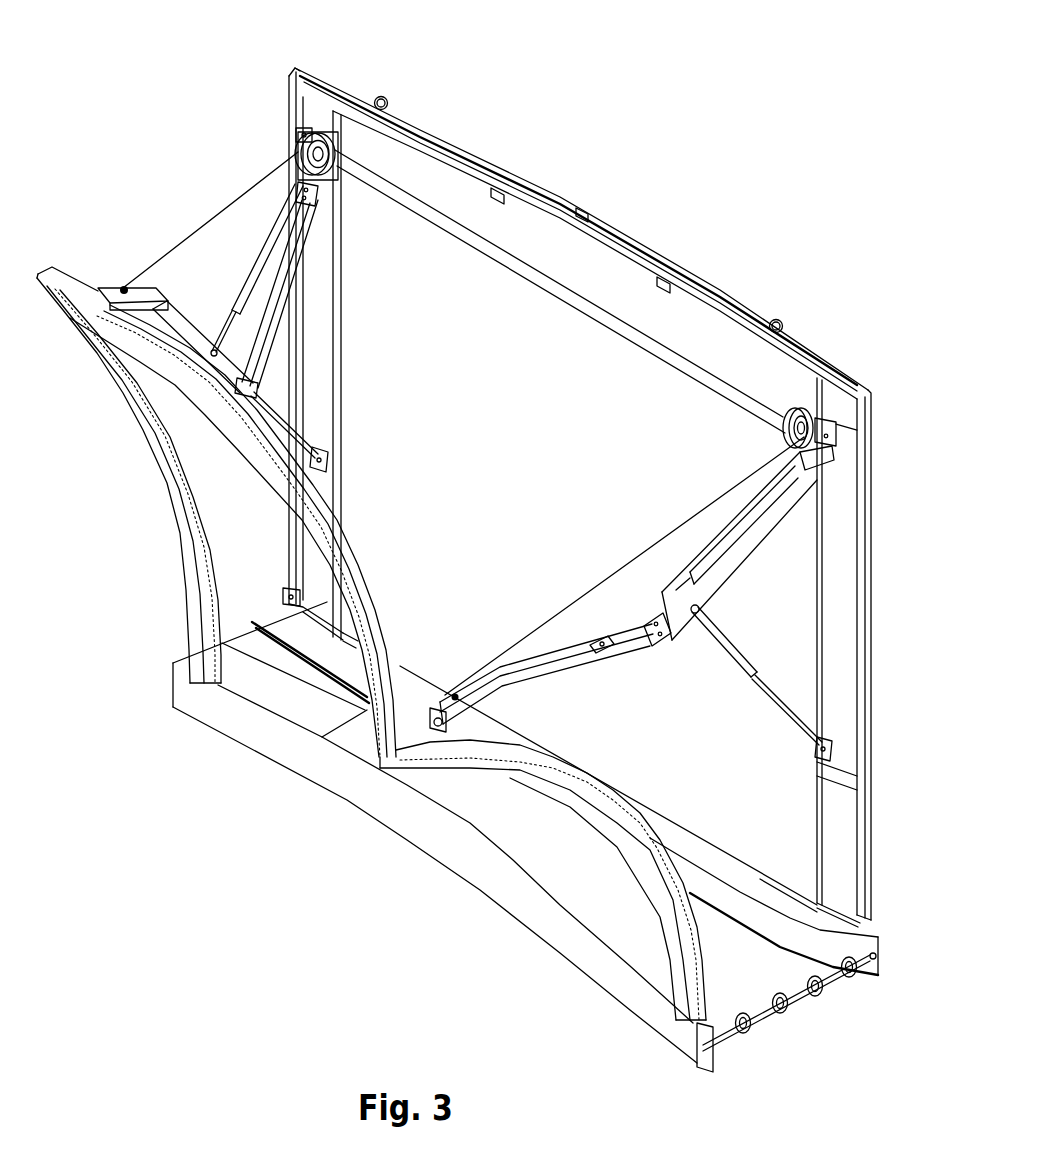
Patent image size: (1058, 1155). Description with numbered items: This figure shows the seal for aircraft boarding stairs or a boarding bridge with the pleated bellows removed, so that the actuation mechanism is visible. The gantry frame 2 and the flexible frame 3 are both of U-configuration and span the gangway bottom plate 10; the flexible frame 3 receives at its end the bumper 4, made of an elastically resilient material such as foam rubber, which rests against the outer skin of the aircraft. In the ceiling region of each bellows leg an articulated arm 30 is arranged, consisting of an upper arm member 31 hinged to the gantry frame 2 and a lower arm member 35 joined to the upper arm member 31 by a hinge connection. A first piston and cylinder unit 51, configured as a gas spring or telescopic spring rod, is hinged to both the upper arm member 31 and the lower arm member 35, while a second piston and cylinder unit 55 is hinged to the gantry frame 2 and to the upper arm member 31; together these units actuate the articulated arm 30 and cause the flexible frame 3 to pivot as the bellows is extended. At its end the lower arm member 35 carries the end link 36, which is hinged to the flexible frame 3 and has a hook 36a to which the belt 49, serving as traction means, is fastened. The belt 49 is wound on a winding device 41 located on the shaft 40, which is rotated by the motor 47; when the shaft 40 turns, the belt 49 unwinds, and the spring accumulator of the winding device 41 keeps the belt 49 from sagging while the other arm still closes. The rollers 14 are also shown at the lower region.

The gantry frame 2 is at (867, 629).
The flexible frame 3 is at (637, 827).
The bumper 4 is at (690, 958).
The gangway bottom plate 10 is at (640, 943).
The rollers 14 is at (760, 1007).
The articulated arm 30 is at (592, 633).
The upper arm member 31 is at (737, 562).
The lower arm member 35 is at (573, 660).
The end link 36 is at (443, 720).
The hook 36a is at (455, 697).
The shaft 40 is at (578, 298).
The winding device 41 is at (793, 403).
The motor 47 is at (312, 132).
The belt 49 is at (672, 522).
The first piston and cylinder unit 51 is at (727, 527).
The second piston and cylinder unit 55 is at (742, 650).